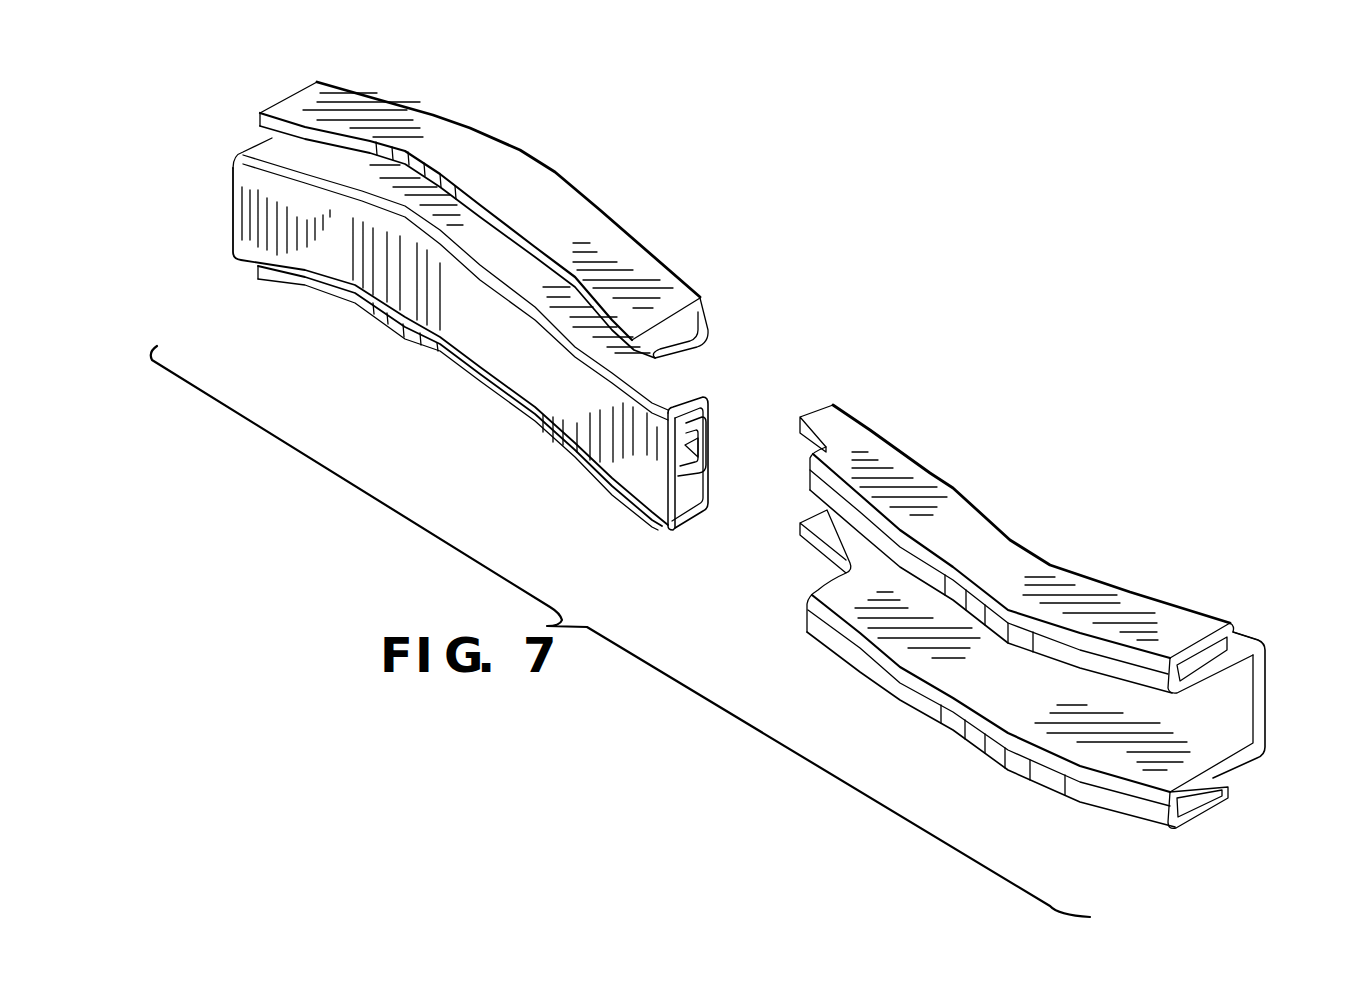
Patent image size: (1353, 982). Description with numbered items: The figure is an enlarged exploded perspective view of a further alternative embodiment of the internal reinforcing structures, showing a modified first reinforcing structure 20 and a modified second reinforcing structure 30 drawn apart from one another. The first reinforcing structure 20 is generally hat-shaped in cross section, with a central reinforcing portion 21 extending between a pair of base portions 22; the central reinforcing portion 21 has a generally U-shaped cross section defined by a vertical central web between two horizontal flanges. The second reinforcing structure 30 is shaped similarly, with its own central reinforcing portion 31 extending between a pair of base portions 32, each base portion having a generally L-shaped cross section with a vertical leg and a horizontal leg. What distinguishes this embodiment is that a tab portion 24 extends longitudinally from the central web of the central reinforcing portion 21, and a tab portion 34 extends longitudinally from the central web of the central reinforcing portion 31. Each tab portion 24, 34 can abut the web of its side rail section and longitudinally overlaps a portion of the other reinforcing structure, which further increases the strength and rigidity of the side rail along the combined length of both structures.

The first reinforcing structure 20 is at (682, 188).
The central reinforcing portion 21 is at (492, 343).
The base portions 22 is at (430, 124).
The tab portion 24 is at (655, 470).
The second reinforcing structure 30 is at (1092, 498).
The central reinforcing portion 31 is at (1247, 690).
The base portions 32 is at (1127, 613).
The tab portion 34 is at (837, 417).